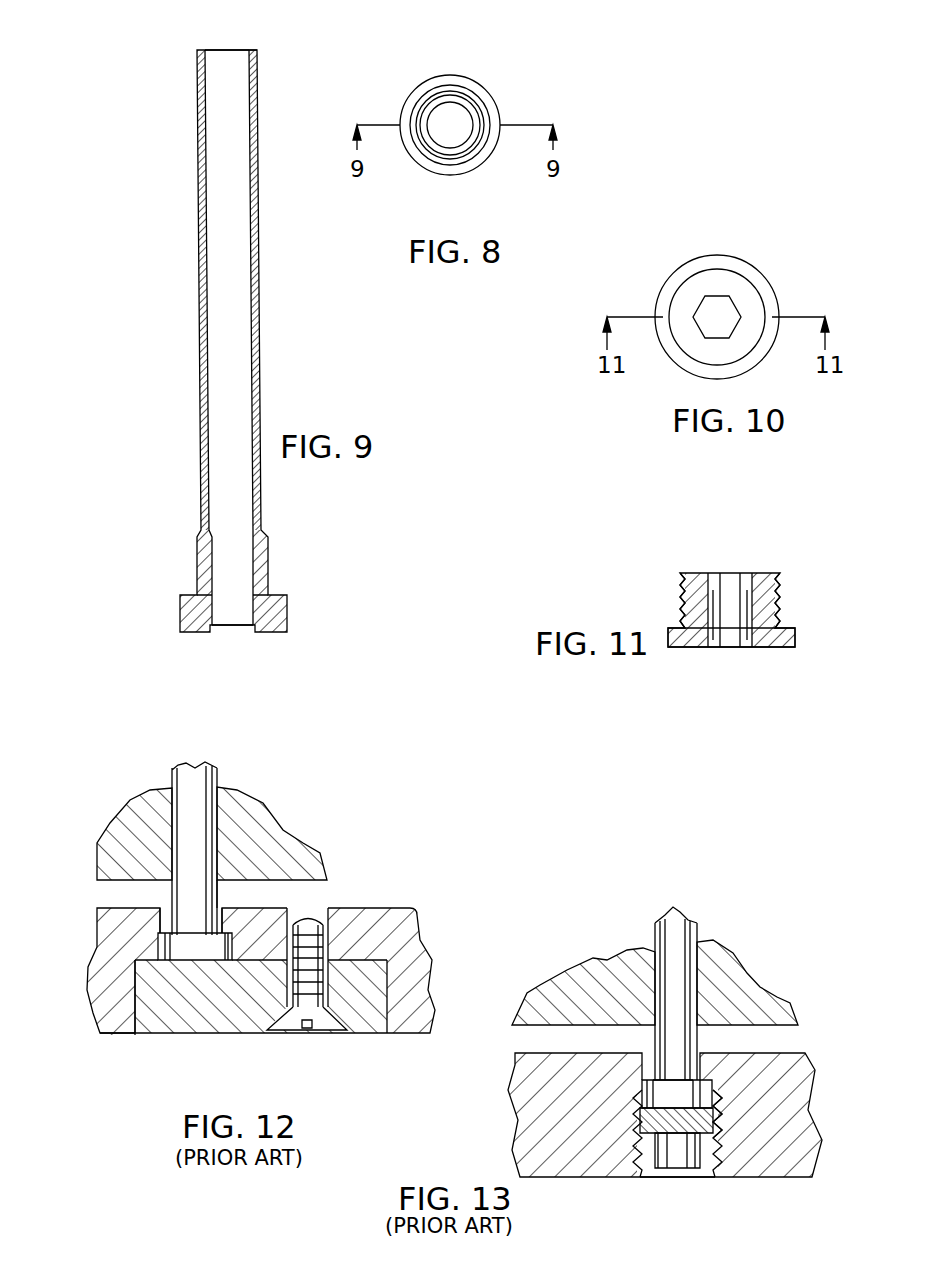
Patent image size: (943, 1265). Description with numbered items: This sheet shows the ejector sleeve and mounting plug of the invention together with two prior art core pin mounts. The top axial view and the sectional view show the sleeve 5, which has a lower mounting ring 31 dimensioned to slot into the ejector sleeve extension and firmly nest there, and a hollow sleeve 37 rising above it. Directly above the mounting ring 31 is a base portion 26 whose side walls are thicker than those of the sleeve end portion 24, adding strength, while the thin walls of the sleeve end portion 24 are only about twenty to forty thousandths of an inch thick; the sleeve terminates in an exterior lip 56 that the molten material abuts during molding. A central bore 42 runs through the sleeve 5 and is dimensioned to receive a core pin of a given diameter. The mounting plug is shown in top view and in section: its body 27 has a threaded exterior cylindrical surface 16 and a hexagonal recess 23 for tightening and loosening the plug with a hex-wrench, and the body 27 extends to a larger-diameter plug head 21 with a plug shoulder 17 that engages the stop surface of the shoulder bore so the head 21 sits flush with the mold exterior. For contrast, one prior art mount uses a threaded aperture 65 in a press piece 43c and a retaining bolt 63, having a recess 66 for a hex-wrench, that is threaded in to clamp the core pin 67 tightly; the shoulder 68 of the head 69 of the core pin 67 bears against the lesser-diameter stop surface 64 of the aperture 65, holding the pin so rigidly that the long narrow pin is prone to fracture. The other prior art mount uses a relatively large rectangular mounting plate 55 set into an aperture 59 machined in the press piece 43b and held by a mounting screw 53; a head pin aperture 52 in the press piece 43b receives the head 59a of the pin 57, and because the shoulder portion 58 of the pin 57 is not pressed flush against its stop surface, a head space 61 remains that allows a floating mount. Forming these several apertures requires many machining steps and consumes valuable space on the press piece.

In FIG. 9, the sleeve 5 is at (216, 323).
In FIG. 11, the threaded exterior cylindrical surface 16 is at (773, 598).
In FIG. 11, the plug shoulder 17 is at (782, 647).
In FIG. 11, the plug head 21 is at (686, 640).
In FIG. 10, the hexagonal recess 23 is at (717, 300).
In FIG. 9, the sleeve end portion 24 is at (261, 391).
In FIG. 8, the sleeve end portion 24 is at (474, 105).
In FIG. 9, the base portion 26 is at (259, 561).
In FIG. 8, the base portion 26 is at (463, 82).
In FIG. 11, the base portion 26 is at (695, 605).
In FIG. 11, the body 27 is at (720, 650).
In FIG. 9, the lower mounting ring 31 is at (273, 615).
In FIG. 8, the lower mounting ring 31 is at (492, 152).
In FIG. 9, the hollow sleeve 37 is at (198, 160).
In FIG. 9, the central bore 42 is at (220, 446).
In FIG. 8, the central bore 42 is at (437, 138).
In FIG. 12, the press piece 43b is at (367, 927).
In FIG. 13, the press piece 43c is at (787, 1085).
In FIG. 12, the head pin aperture 52 is at (160, 925).
In FIG. 12, the mounting screw 53 is at (320, 1022).
In FIG. 12, the mounting plate 55 is at (377, 997).
In FIG. 9, the exterior lip 56 is at (253, 50).
In FIG. 12, the exterior lip 56 is at (289, 918).
In FIG. 12, the pin 57 is at (190, 802).
In FIG. 12, the shoulder portion 58 is at (227, 906).
In FIG. 12, the aperture 59 is at (132, 1037).
In FIG. 12, the head 59a is at (90, 977).
In FIG. 12, the head space 61 is at (185, 944).
In FIG. 13, the retaining bolt 63 is at (647, 1153).
In FIG. 13, the stop surface 64 is at (714, 1078).
In FIG. 13, the threaded aperture 65 is at (713, 1113).
In FIG. 13, the recess 66 is at (680, 1157).
In FIG. 13, the core pin 67 is at (673, 957).
In FIG. 13, the shoulder 68 is at (653, 1010).
In FIG. 13, the head 69 is at (665, 1096).